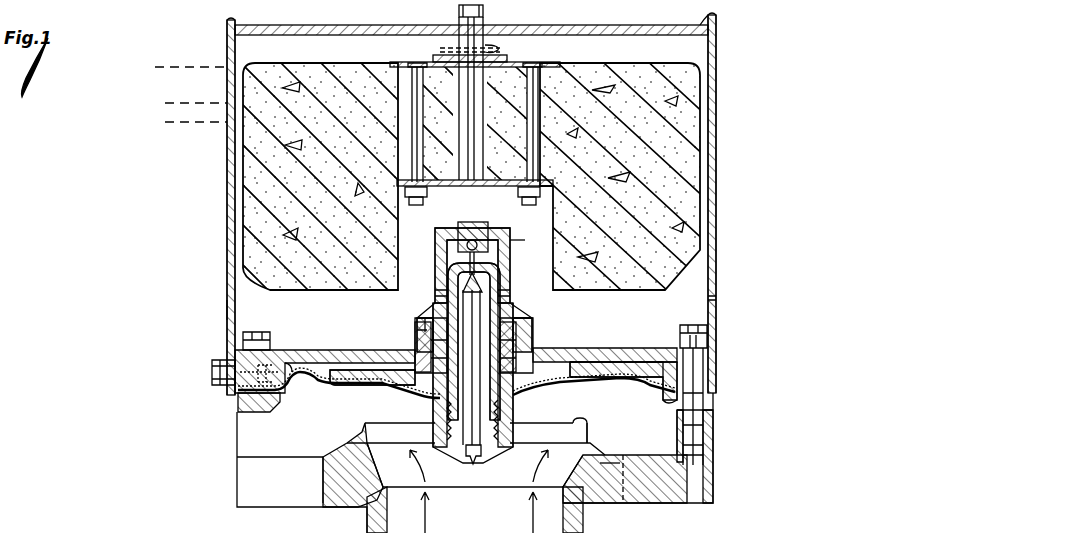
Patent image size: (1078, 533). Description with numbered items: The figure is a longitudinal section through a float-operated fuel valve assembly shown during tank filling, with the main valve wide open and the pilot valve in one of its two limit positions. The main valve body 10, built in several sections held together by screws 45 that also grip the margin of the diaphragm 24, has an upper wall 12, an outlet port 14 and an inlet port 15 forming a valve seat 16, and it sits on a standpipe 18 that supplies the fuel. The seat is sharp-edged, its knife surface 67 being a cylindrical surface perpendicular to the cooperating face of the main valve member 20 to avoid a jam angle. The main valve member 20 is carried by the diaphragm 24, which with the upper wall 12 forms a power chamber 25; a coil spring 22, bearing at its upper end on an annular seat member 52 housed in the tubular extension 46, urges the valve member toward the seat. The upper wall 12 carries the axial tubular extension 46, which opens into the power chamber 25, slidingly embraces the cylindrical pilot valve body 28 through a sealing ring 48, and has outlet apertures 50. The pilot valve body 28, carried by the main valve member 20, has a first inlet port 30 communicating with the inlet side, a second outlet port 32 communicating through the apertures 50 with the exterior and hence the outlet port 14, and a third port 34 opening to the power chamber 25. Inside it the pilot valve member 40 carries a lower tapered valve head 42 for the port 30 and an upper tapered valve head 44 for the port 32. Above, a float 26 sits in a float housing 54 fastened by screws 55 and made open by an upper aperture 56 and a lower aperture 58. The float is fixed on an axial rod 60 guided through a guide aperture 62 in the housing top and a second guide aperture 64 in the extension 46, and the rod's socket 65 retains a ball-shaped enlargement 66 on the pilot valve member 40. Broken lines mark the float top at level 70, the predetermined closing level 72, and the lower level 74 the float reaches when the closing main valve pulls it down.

The main valve body 10 is at (720, 424).
The upper wall 12 is at (618, 350).
The outlet port 14 is at (212, 450).
The inlet port 15 is at (560, 455).
The valve seat 16 is at (328, 457).
The standpipe 18 is at (583, 524).
The main valve member 20 is at (548, 388).
The coil spring 22 is at (518, 350).
The diaphragm 24 is at (300, 385).
The power chamber 25 is at (345, 342).
The float 26 is at (360, 63).
The pilot valve body 28 is at (500, 277).
The first inlet port 30 is at (480, 460).
The second outlet port 32 is at (478, 262).
The third port 34 is at (430, 398).
The pilot valve member 40 is at (490, 343).
The lower tapered valve head 42 is at (468, 460).
The upper tapered valve head 44 is at (465, 285).
The screws 45 is at (245, 341).
The axial tubular extension 46 is at (523, 241).
The sealing ring 48 is at (514, 310).
The outlet apertures 50 is at (437, 291).
The annular seat member 52 is at (437, 328).
The float housing 54 is at (227, 240).
The screws 55 is at (212, 368).
The upper aperture 56 is at (716, 67).
The lower aperture 58 is at (716, 297).
The axial rod 60 is at (470, 150).
The guide aperture 62 is at (480, 38).
The second guide aperture 64 is at (488, 228).
The socket 65 is at (455, 232).
The ball-shaped enlargement 66 is at (476, 240).
The knife surface 67 is at (578, 420).
The float upper surface level 70 is at (196, 67).
The predetermined liquid level 72 is at (200, 122).
The lower float level 74 is at (200, 103).